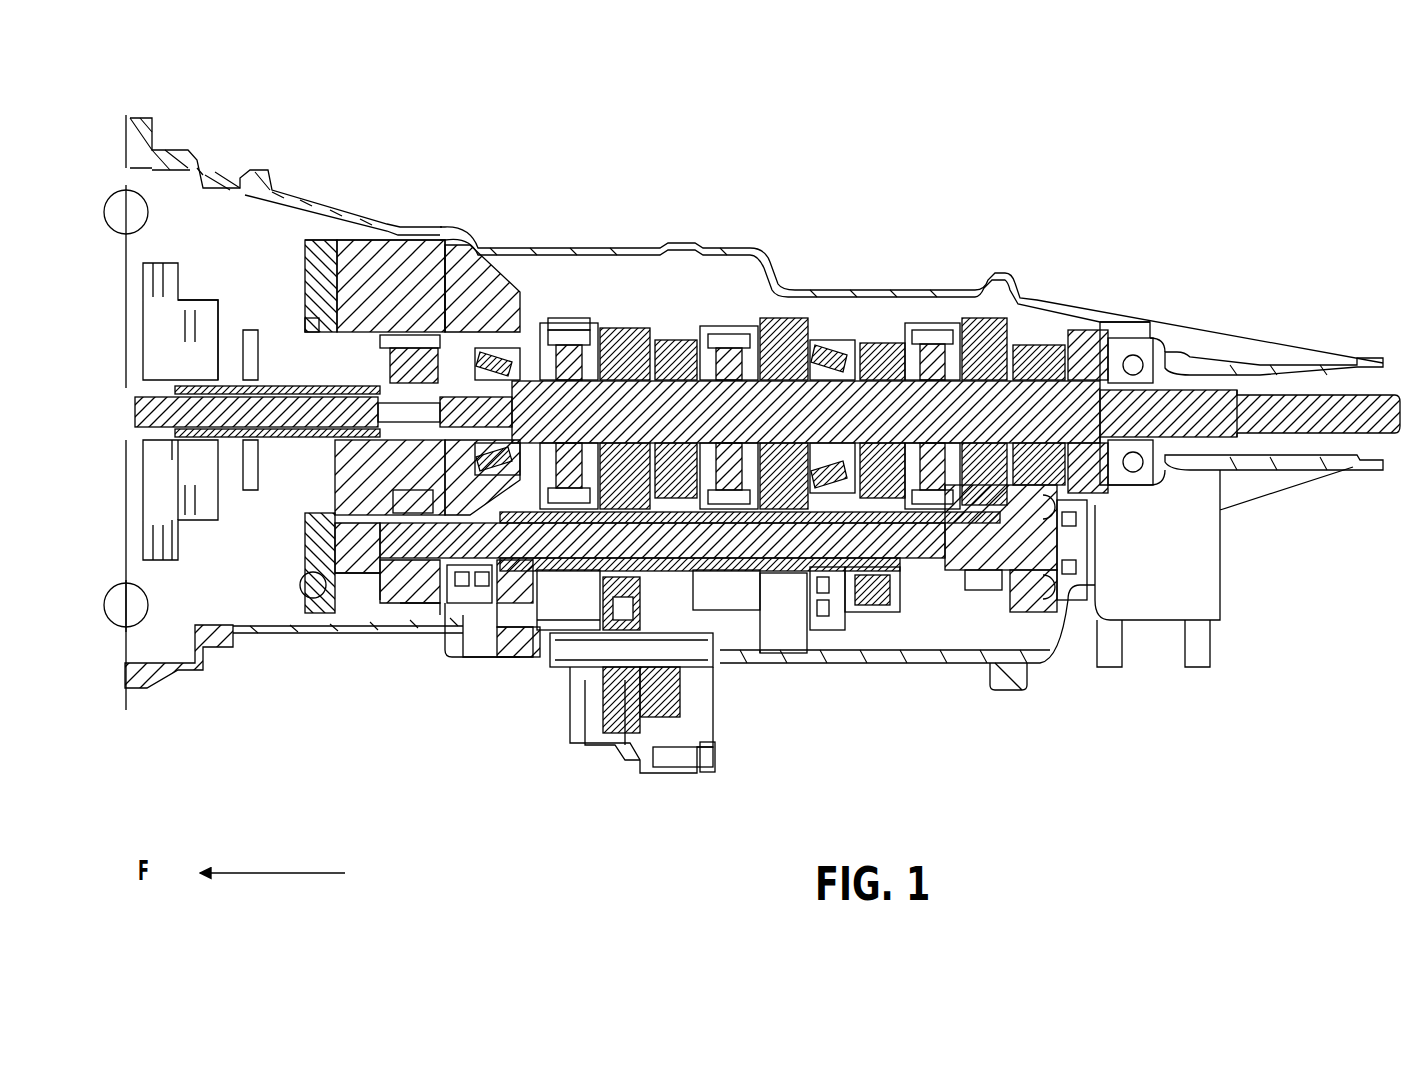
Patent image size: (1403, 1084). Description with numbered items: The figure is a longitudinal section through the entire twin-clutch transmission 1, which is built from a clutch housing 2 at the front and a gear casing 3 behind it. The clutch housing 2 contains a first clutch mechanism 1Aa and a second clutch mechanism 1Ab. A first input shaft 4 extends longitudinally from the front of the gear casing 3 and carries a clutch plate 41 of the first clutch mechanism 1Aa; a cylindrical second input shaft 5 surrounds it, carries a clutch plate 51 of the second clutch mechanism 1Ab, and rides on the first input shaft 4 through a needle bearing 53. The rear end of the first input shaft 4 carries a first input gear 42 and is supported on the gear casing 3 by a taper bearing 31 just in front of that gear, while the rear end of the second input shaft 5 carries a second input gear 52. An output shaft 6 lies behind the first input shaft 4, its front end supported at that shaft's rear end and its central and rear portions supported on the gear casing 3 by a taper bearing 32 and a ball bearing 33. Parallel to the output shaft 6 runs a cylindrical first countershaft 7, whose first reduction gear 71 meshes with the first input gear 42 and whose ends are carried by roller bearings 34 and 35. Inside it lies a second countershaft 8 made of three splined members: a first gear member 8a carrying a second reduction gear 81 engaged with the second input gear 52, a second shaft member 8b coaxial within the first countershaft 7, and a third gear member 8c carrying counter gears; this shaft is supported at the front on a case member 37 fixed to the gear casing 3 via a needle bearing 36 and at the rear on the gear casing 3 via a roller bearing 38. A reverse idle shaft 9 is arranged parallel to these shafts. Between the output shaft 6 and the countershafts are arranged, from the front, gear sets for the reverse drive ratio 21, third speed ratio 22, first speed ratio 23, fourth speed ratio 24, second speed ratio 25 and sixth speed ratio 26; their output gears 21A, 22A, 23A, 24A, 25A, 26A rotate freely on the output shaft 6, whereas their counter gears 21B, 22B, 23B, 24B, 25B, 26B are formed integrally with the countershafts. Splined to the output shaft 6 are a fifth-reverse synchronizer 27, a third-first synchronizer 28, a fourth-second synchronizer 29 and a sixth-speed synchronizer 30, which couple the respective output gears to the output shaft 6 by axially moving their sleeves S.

The twin-clutch transmission 1 is at (236, 168).
The first clutch mechanism 1Aa is at (170, 325).
The second clutch mechanism 1Ab is at (215, 335).
The clutch housing 2 is at (225, 640).
The gear casing 3 is at (690, 772).
The first input shaft 4 is at (293, 392).
The second input shaft 5 is at (378, 370).
The output shaft 6 is at (641, 398).
The first countershaft 7 is at (570, 560).
The second countershaft 8 is at (915, 602).
The first gear member 8a is at (382, 605).
The second shaft member 8b is at (790, 655).
The third gear member 8c is at (992, 692).
The reverse idle shaft 9 is at (600, 670).
The gear set of reverse drive ratio 21 is at (618, 320).
The output gear 21A is at (592, 330).
The counter gear 21B is at (568, 600).
The gear set of third speed ratio 22 is at (668, 332).
The output gear 22A is at (680, 340).
The counter gear 22B is at (688, 580).
The gear set of first speed ratio 23 is at (778, 305).
The output gear 23A is at (778, 290).
The counter gear 23B is at (762, 585).
The gear set of fourth speed ratio 24 is at (880, 332).
The output gear 24A is at (885, 342).
The counter gear 24B is at (882, 595).
The gear set of second speed ratio 25 is at (982, 306).
The output gear 25A is at (982, 308).
The counter gear 25B is at (980, 592).
The gear set of sixth speed ratio 26 is at (1035, 332).
The output gear 26A is at (1040, 360).
The counter gear 26B is at (1030, 602).
The 5-R synchronizer 27 is at (582, 328).
The 3-1 synchronizer 28 is at (716, 330).
The 4-2 synchronizer 29 is at (900, 330).
The 6 synchronizer 30 is at (1040, 330).
The taper bearing 31 is at (497, 300).
The taper bearing 32 is at (814, 338).
The ball bearing 33 is at (1140, 345).
The roller bearing 34 is at (473, 582).
The roller bearing 35 is at (826, 632).
The needle bearing 36 is at (340, 602).
The case member 37 is at (413, 350).
The roller bearing 38 is at (1090, 615).
The clutch plate 41 is at (170, 510).
The first input gear 42 is at (512, 372).
The clutch plate 51 is at (197, 463).
The second input gear 52 is at (462, 350).
The needle bearing 53 is at (303, 603).
The first reduction gear 71 is at (495, 625).
The second reduction gear 81 is at (405, 615).
The sleeve S is at (562, 322).